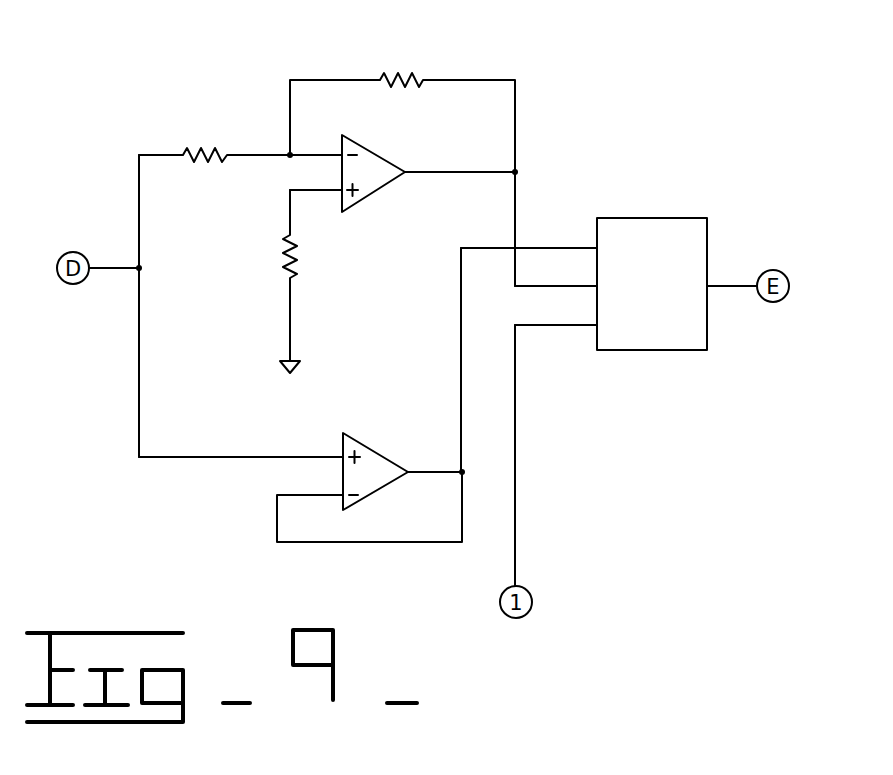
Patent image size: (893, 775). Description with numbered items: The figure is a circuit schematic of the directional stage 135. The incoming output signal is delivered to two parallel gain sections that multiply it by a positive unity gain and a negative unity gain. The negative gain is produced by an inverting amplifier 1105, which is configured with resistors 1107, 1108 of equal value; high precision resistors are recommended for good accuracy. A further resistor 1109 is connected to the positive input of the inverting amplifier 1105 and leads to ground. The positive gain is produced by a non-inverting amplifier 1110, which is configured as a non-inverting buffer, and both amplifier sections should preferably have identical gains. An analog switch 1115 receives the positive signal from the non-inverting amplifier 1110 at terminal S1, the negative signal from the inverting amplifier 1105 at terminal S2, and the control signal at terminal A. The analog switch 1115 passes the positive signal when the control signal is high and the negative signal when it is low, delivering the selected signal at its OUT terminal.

The resistor 1107 is at (188, 148).
The resistor 1108 is at (418, 72).
The inverting amplifier 1105 is at (371, 142).
The resistor 1109 is at (299, 278).
The non-inverting amplifier 1110 is at (345, 428).
The analog switch 1115 is at (685, 218).
The directional stage 135 is at (700, 52).